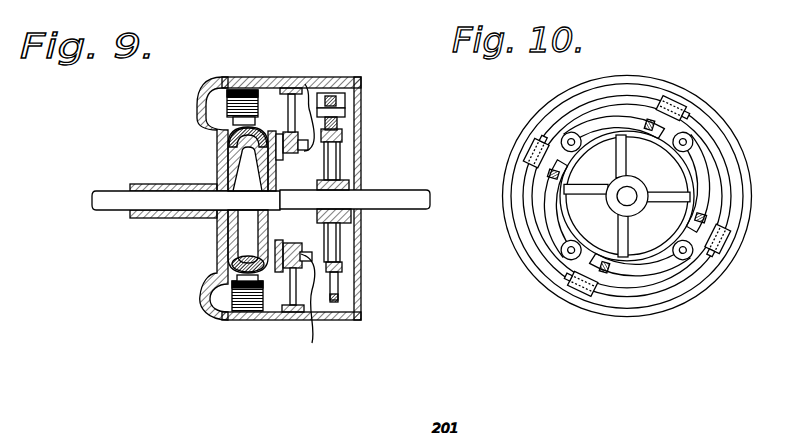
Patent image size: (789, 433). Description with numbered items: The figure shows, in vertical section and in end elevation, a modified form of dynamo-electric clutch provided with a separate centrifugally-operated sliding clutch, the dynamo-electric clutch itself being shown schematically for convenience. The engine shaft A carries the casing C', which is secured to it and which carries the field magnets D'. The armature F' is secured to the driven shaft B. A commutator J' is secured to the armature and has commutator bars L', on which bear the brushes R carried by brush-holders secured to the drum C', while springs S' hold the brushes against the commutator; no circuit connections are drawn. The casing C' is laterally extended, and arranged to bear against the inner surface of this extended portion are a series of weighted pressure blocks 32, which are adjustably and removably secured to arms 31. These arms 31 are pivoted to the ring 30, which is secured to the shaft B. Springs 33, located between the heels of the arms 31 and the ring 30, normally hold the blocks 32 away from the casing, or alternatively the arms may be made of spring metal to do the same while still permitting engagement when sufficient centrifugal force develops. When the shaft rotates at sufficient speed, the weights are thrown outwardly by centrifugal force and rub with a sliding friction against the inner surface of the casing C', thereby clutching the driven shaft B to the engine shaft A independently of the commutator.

In FIG. 9, the engine shaft A is at (120, 199).
In FIG. 9, the driven shaft B is at (414, 204).
In FIG. 10, the driven shaft B is at (634, 185).
In FIG. 9, the casing C′ is at (270, 77).
In FIG. 10, the casing C′ is at (616, 195).
In FIG. 9, the field magnets D′ is at (228, 108).
In FIG. 9, the armature F′ is at (247, 229).
In FIG. 9, the commutator J′ is at (276, 225).
In FIG. 9, the commutator bars L′ is at (277, 278).
In FIG. 9, the brushes R is at (345, 276).
In FIG. 9, the springs S′ is at (305, 84).
In FIG. 9, the ring 30 is at (336, 270).
In FIG. 10, the ring 30 is at (627, 196).
In FIG. 9, the arms 31 is at (333, 100).
In FIG. 10, the arms 31 is at (633, 193).
In FIG. 9, the weighted pressure blocks 32 is at (346, 99).
In FIG. 10, the weighted pressure blocks 32 is at (625, 200).
In FIG. 9, the springs 33 is at (340, 127).
In FIG. 10, the springs 33 is at (626, 199).